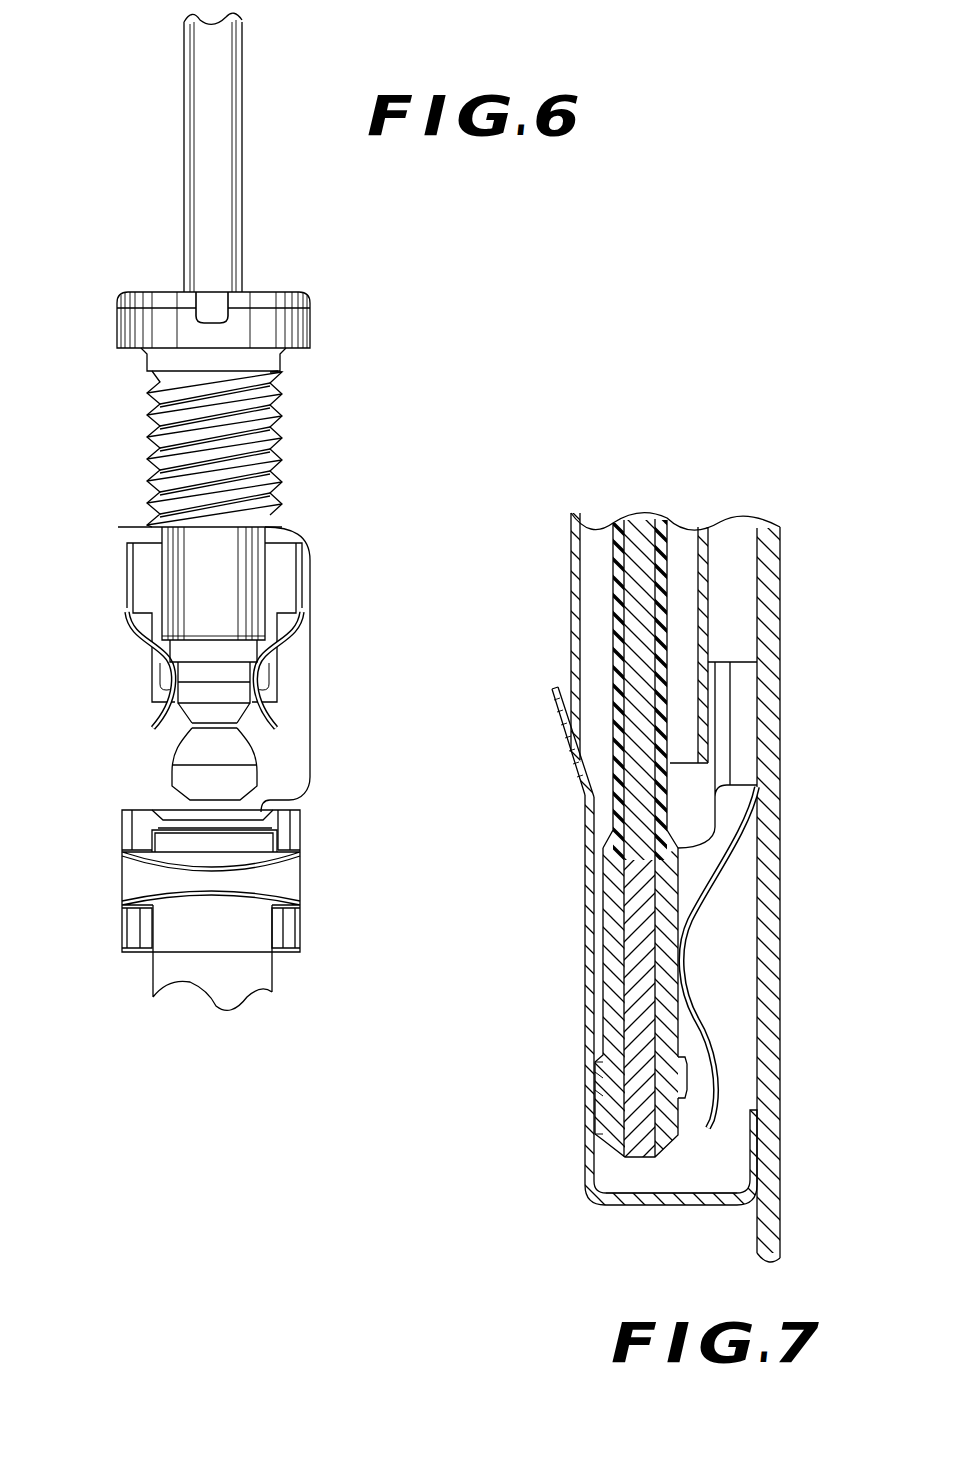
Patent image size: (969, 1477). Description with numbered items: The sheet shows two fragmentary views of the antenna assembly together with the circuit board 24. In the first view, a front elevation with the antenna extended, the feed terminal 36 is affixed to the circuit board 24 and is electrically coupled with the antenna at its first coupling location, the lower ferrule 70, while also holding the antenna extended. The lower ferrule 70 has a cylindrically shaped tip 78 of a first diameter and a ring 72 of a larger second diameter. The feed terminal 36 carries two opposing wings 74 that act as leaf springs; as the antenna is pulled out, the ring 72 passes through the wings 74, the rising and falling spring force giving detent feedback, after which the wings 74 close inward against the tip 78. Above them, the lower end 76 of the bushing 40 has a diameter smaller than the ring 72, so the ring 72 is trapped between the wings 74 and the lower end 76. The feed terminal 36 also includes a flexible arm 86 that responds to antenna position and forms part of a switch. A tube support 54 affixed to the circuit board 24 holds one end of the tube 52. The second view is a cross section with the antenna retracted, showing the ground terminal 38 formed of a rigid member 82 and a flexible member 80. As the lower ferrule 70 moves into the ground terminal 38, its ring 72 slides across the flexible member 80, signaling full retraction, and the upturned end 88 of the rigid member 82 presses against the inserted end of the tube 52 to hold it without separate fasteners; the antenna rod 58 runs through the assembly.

In FIG. 6, the cable rod 58 is at (227, 118).
In FIG. 7, the cable rod 58 is at (678, 505).
In FIG. 6, the bushing 40 is at (295, 318).
In FIG. 6, the feed terminal 36 is at (104, 560).
In FIG. 6, the lower end of bushing 76 is at (247, 557).
In FIG. 6, the ring 72 is at (172, 645).
In FIG. 7, the ring 72 is at (594, 1072).
In FIG. 6, the wings 74 is at (157, 721).
In FIG. 6, the tip 78 is at (194, 693).
In FIG. 6, the flexible arm 86 is at (173, 777).
In FIG. 6, the circuit board 24 is at (314, 749).
In FIG. 7, the circuit board 24 is at (782, 725).
In FIG. 6, the tube support 54 is at (278, 881).
In FIG. 6, the tube 52 is at (272, 967).
In FIG. 7, the tube 52 is at (571, 598).
In FIG. 7, the upturned end 88 is at (554, 708).
In FIG. 7, the lower ferrule 70 is at (608, 931).
In FIG. 7, the ground terminal 38 is at (565, 1008).
In FIG. 7, the flexible member 80 is at (716, 1056).
In FIG. 7, the rigid member 82 is at (588, 1183).